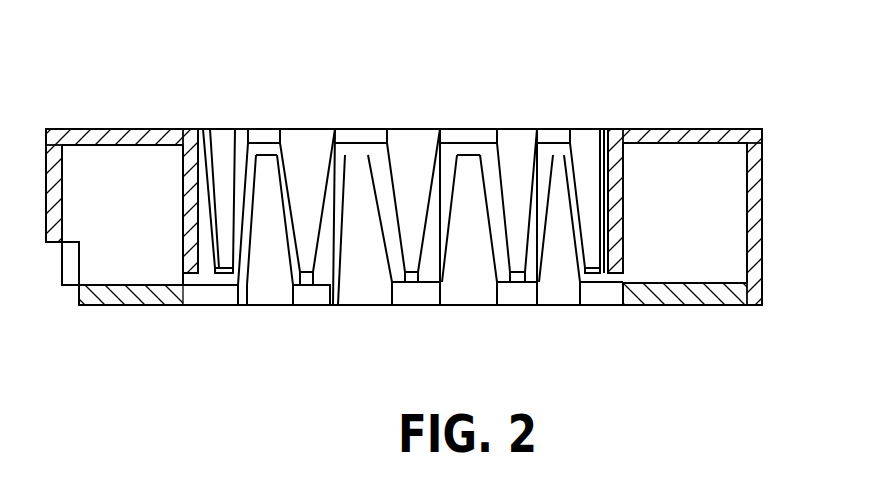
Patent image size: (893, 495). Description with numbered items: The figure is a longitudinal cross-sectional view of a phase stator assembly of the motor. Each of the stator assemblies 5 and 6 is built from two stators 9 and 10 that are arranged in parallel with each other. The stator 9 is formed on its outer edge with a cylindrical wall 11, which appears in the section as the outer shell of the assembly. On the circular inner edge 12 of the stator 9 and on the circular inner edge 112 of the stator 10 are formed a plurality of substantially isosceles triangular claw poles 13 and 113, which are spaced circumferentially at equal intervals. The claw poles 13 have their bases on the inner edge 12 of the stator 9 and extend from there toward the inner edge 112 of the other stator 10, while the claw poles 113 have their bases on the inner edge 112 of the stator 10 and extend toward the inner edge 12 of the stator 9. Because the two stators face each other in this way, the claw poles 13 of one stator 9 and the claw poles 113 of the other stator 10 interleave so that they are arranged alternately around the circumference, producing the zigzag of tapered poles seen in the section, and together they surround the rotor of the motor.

The stator assembly 5 is at (411, 171).
The stator assembly 6 is at (683, 110).
The stator 9 is at (413, 171).
The stator 10 is at (317, 290).
The cylindrical wall 11 is at (753, 193).
The circular inner edge 12 is at (613, 130).
The claw pole 13 is at (183, 165).
The circular inner edge 112 is at (182, 288).
The claw pole 113 is at (268, 168).